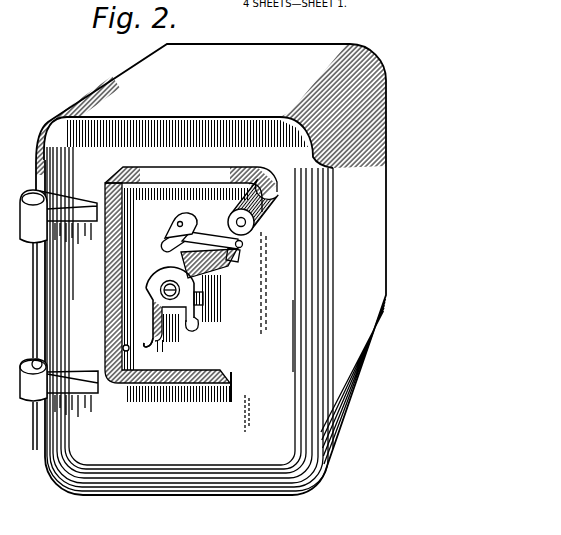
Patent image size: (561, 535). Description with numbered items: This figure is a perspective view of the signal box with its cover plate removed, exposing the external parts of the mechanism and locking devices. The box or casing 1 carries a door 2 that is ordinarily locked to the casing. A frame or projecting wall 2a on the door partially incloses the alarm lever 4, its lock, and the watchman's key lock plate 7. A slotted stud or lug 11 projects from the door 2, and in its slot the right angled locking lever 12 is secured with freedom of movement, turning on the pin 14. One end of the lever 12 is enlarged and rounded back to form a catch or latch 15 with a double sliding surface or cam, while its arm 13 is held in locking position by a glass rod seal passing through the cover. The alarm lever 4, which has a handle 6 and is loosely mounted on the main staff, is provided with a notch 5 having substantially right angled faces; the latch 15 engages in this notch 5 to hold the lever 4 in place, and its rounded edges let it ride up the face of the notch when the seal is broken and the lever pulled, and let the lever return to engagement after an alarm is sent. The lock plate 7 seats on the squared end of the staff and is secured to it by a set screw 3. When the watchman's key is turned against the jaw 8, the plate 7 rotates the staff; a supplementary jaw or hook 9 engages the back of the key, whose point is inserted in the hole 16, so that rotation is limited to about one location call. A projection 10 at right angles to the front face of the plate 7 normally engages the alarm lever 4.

The box or casing 1 is at (242, 74).
The door 2 is at (305, 297).
The frame or projecting wall 2a is at (107, 279).
The set screw 3 is at (165, 292).
The alarm lever 4 is at (210, 258).
The notch 5 is at (230, 252).
The handle 6 is at (262, 212).
The lock plate 7 is at (162, 282).
The jaw 8 is at (155, 338).
The supplementary jaw or hook 9 is at (192, 323).
The projection 10 is at (203, 298).
The slotted stud or lug 11 is at (187, 228).
The locking lever 12 is at (206, 239).
The arm of locking lever 13 is at (162, 252).
The pin 14 is at (177, 222).
The catch or latch 15 is at (241, 244).
The hole 16 is at (177, 318).